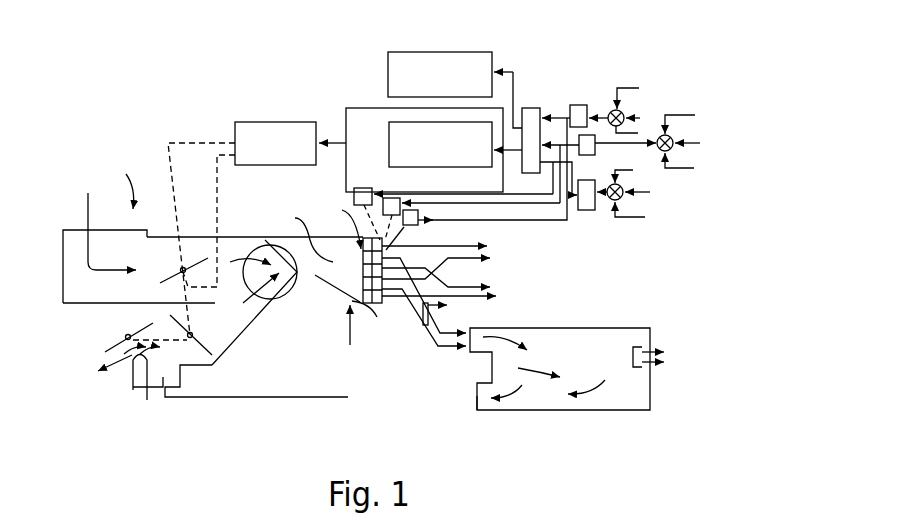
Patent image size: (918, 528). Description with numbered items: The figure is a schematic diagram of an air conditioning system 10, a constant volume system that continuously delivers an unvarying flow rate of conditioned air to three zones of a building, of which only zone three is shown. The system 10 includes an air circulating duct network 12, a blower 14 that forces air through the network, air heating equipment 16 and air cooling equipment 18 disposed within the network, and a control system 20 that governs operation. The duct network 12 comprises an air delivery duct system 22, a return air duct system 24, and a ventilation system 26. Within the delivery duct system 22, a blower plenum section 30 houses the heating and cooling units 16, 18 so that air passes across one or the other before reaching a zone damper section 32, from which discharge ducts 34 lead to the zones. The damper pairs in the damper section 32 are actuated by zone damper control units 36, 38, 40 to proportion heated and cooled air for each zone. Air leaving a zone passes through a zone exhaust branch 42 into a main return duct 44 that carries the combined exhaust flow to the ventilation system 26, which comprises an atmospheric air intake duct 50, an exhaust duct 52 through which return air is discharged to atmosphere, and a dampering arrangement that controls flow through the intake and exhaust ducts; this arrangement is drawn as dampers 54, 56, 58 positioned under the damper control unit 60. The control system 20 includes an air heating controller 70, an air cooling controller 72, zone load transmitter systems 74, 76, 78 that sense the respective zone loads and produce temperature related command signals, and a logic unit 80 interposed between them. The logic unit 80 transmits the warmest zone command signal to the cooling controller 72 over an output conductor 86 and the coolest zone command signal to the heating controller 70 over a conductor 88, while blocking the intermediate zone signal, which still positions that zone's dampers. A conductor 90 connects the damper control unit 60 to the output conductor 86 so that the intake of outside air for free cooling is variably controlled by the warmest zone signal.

The air conditioning system 10 is at (206, 107).
The air circulating duct network 12 is at (255, 328).
The blower 14 is at (290, 290).
The air heating equipment 16 is at (336, 225).
The air cooling equipment 18 is at (374, 318).
The control system 20 is at (369, 69).
The air delivery duct system 22 is at (356, 335).
The return air duct system 24 is at (188, 376).
The ventilation system 26 is at (118, 181).
The blower plenum section 30 is at (299, 232).
The zone damper section 32 is at (390, 250).
The discharge duct 34 is at (503, 328).
The zone damper control unit 36 is at (360, 188).
The zone damper control unit 38 is at (391, 198).
The zone damper control unit 40 is at (410, 210).
The zone exhaust branch 42 is at (477, 410).
The main return duct 44 is at (158, 388).
The atmospheric air intake duct 50 is at (73, 240).
The exhaust duct 52 is at (128, 356).
The outside air damper 54 is at (163, 280).
The exhaust air damper 56 is at (117, 333).
The return air damper 58 is at (202, 333).
The damper control unit 60 is at (252, 122).
The air heating controller 70 is at (462, 46).
The air cooling controller 72 is at (389, 138).
The zone load transmitter system 74 is at (609, 106).
The zone load transmitter system 76 is at (696, 181).
The zone load transmitter system 78 is at (611, 224).
The logic unit 80 is at (528, 108).
The output conductor 86 is at (512, 155).
The conductor 88 is at (513, 100).
The conductor 90 is at (346, 135).